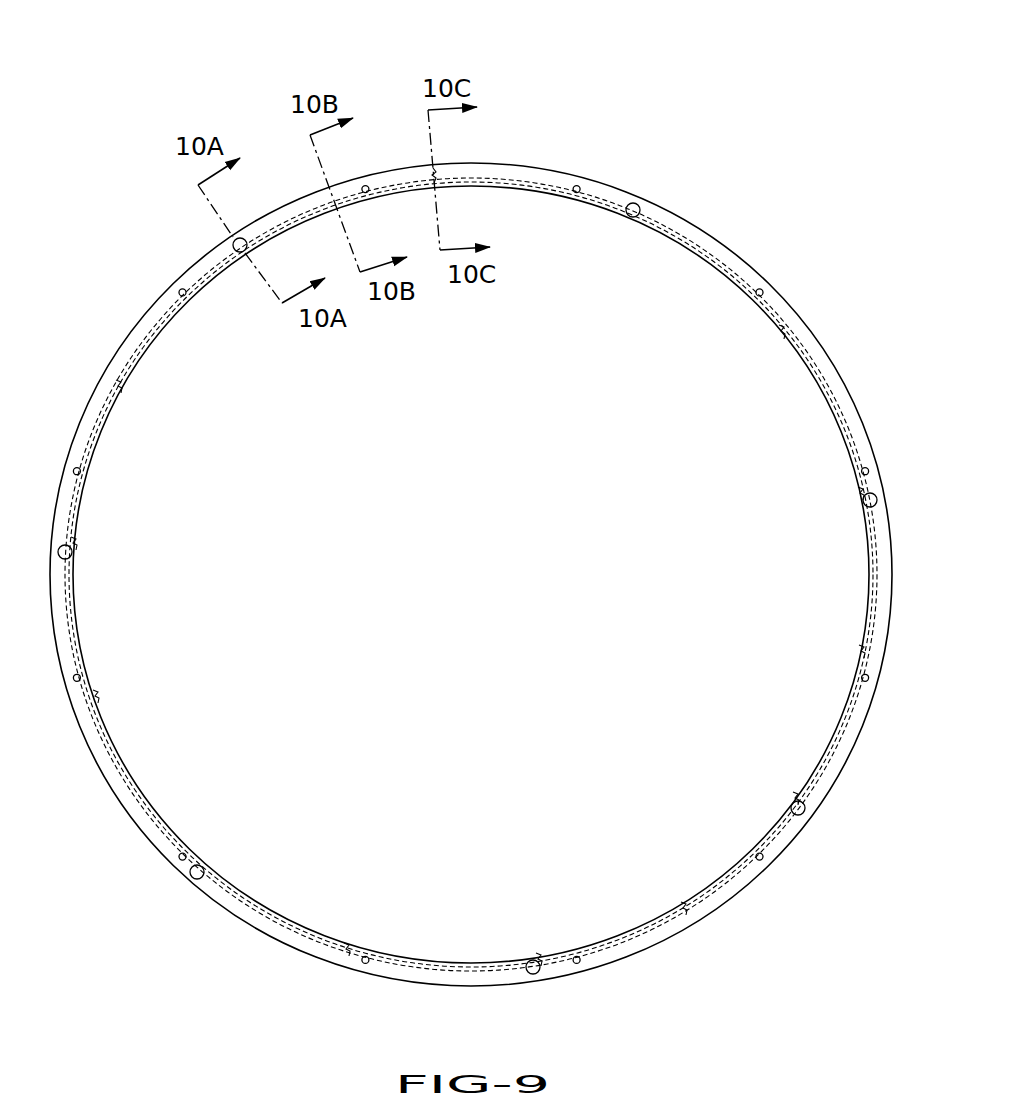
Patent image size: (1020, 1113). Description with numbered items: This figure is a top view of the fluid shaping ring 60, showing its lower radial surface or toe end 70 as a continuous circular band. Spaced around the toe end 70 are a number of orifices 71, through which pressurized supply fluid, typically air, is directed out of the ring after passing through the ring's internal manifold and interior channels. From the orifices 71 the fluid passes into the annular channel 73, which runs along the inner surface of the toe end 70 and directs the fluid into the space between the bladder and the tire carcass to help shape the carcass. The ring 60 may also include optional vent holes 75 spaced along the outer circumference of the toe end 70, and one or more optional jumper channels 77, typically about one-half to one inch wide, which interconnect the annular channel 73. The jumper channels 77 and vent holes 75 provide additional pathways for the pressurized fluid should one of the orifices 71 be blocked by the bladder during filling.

The fluid shaping ring 60 is at (616, 112).
The toe end 70 is at (124, 749).
The orifices 71 is at (68, 559).
The annular channel 73 is at (668, 233).
The vent holes 75 is at (180, 293).
The jumper channels 77 is at (125, 392).